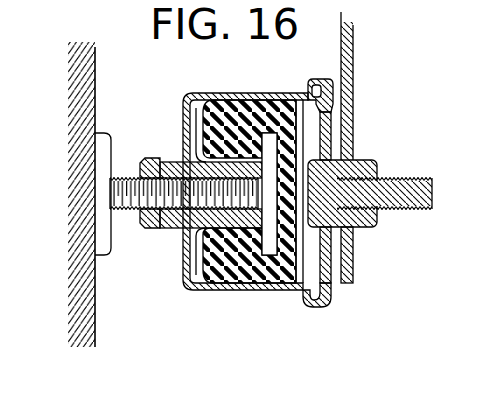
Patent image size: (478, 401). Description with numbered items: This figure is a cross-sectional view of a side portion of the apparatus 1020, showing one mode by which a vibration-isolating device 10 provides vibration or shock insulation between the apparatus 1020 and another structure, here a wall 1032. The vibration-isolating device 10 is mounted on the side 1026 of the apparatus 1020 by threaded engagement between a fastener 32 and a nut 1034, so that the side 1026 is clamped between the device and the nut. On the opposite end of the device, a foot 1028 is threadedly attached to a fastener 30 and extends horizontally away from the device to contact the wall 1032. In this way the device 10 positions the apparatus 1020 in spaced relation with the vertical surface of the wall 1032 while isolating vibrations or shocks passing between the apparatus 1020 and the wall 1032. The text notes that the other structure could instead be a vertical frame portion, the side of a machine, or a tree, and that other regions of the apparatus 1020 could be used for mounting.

The vibration-isolating device 10 is at (258, 305).
The fastener 30 is at (176, 165).
The fastener 32 is at (397, 182).
The apparatus 1020 is at (362, 270).
The side 1026 is at (353, 58).
The foot 1028 is at (110, 244).
The wall 1032 is at (95, 83).
The nut 1034 is at (377, 218).